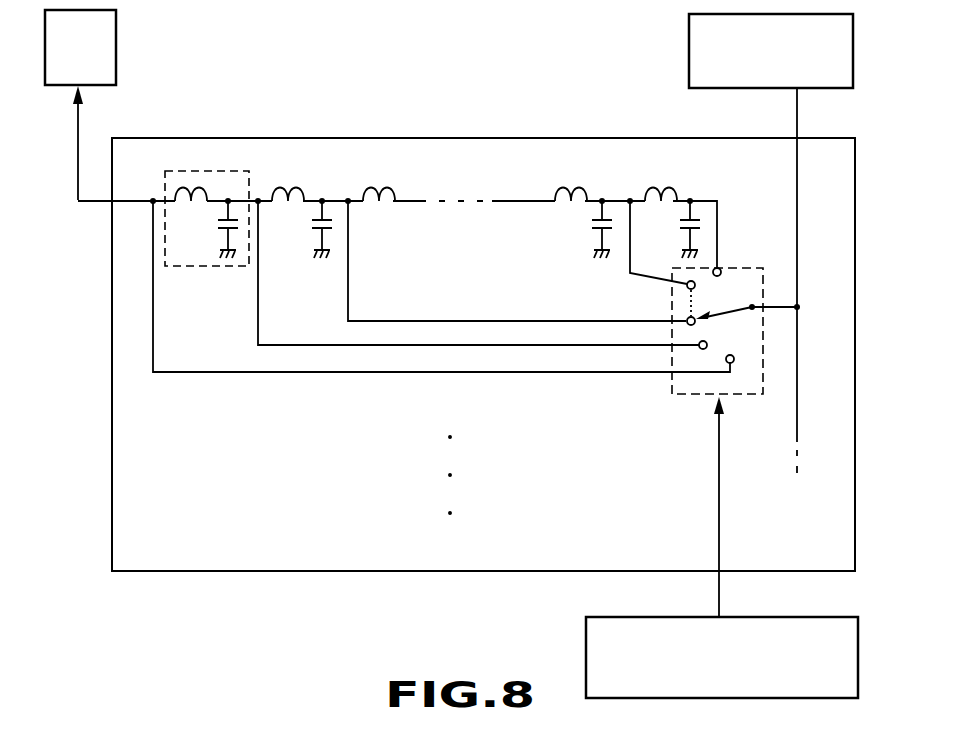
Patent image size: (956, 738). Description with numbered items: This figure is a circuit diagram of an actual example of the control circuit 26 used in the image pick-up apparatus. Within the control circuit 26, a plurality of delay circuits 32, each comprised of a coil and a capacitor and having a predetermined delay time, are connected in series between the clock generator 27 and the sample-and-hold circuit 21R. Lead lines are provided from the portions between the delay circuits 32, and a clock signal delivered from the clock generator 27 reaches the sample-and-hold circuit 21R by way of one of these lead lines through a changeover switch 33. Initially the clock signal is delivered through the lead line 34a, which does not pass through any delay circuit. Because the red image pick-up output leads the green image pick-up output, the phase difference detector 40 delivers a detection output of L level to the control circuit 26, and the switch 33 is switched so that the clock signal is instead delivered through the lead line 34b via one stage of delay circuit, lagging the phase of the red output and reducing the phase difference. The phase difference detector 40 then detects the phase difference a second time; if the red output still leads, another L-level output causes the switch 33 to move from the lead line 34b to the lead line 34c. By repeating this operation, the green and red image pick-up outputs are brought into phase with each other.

The sample-and-hold circuit 21R is at (117, 30).
The clock generator 27 is at (689, 33).
The control circuit 26 is at (459, 150).
The delay circuit 32 is at (182, 266).
The lead line 34a is at (208, 372).
The lead line 34b is at (270, 344).
The lead line 34c is at (372, 320).
The changeover switch 33 is at (672, 385).
The phase difference detector 40 is at (586, 641).